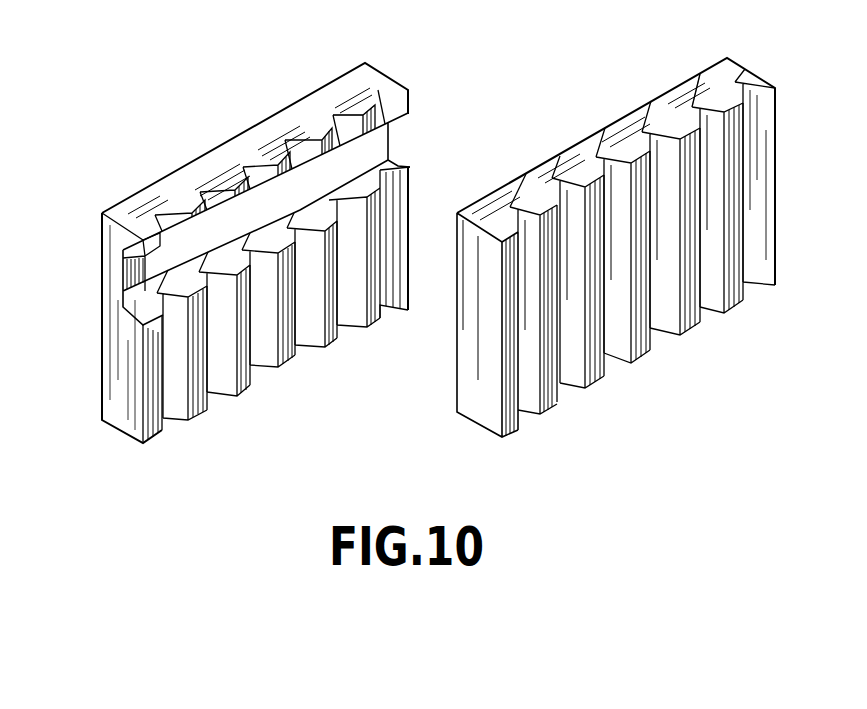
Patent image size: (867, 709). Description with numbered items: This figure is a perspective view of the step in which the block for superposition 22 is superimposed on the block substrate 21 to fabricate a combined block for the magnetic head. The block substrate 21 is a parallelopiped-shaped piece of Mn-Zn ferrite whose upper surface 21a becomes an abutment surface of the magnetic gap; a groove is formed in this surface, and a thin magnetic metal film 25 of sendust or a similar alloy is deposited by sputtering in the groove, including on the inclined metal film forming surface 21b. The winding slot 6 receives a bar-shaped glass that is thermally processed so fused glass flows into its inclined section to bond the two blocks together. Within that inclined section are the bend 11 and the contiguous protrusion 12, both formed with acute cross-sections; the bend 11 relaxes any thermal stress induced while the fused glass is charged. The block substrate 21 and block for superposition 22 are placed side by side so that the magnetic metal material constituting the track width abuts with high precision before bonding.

The winding slot 6 is at (378, 140).
The bend 11 is at (122, 272).
The protrusion 12 is at (125, 268).
The block substrate 21 is at (612, 278).
The upper surface 21a is at (553, 395).
The metal film forming surface 21b is at (523, 207).
The block for superposition 22 is at (125, 415).
The thin magnetic metal film 25 is at (345, 108).